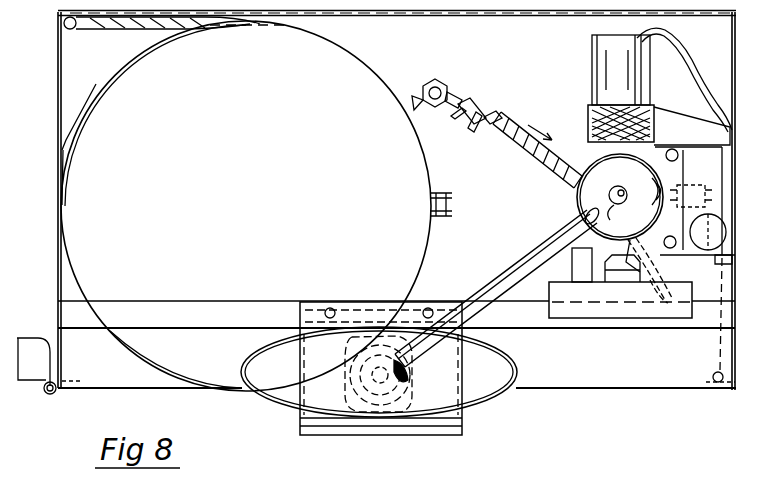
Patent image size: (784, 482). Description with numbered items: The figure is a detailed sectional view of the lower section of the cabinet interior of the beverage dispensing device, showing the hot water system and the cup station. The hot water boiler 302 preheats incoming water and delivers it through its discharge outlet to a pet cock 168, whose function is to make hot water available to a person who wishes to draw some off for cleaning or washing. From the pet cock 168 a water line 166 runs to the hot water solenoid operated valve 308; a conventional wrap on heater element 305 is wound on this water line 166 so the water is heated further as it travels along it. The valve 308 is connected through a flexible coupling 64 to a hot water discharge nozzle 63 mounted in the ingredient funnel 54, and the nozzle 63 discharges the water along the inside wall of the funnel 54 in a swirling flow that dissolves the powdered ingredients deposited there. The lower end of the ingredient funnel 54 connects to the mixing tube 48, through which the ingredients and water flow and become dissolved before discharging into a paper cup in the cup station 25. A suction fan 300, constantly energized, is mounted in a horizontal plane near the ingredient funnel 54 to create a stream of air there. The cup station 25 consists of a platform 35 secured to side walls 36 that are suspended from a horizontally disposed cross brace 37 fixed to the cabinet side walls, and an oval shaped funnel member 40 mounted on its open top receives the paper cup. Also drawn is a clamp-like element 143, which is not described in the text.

The hot water boiler 302 is at (362, 234).
The pet cock 168 is at (488, 109).
The wrap on heater element 305 is at (526, 139).
The water line 166 is at (546, 166).
The suction fan 300 is at (590, 118).
The ingredient funnel 54 is at (584, 198).
The hot water discharge nozzle 63 is at (660, 190).
The flexible coupling 64 is at (702, 196).
The solenoid operated valve 308 is at (718, 232).
The mixing tube 48 is at (492, 284).
The clamp 143 is at (450, 208).
The cross brace 37 is at (216, 318).
The oval shaped funnel member 40 is at (512, 358).
The side walls 36 is at (464, 380).
The cup station 25 is at (446, 408).
The platform 35 is at (438, 426).